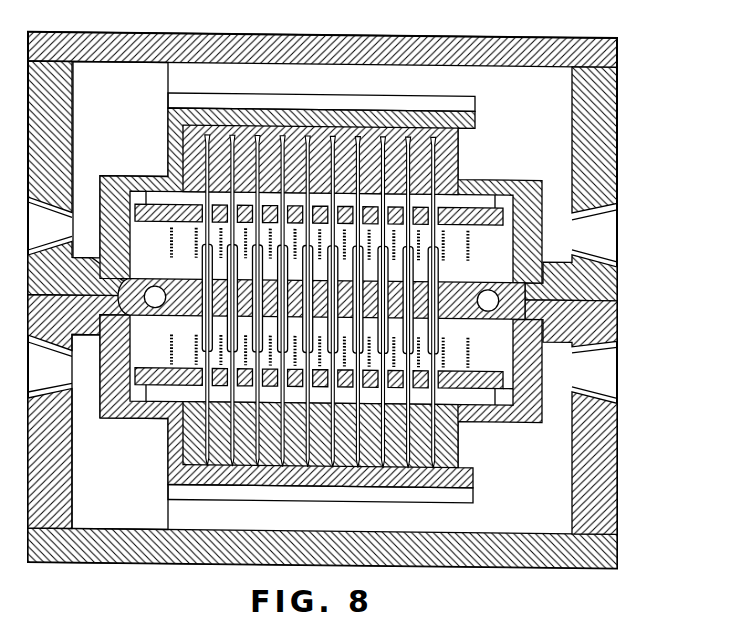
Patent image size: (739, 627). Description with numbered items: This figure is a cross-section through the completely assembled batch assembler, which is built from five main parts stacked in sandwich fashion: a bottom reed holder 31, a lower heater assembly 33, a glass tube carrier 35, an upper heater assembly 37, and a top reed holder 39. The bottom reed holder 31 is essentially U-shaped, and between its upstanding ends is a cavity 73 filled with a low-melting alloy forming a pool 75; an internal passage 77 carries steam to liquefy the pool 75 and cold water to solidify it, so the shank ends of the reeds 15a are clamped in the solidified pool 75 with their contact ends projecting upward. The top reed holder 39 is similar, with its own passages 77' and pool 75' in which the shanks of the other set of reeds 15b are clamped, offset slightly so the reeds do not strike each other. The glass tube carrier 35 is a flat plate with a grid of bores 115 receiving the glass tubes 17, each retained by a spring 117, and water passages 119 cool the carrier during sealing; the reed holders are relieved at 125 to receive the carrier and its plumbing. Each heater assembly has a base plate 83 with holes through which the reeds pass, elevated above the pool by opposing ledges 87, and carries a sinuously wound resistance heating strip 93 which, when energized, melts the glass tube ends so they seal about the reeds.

The set of reeds 15a is at (307, 439).
The set of reeds 15b is at (330, 164).
The glass tube 17 is at (438, 270).
The bottom reed holder 31 is at (622, 452).
The lower heater assembly 33 is at (477, 357).
The glass tube carrier 35 is at (522, 292).
The upper heater assembly 37 is at (480, 227).
The top reed holder 39 is at (627, 138).
The cavity 73 is at (455, 438).
The pool of low-melting alloy 75 is at (321, 402).
The pool of low-melting alloy 75' is at (321, 195).
The internal passage 77 is at (120, 431).
The passages 77' is at (120, 159).
The base plate 83 is at (167, 370).
The ledges 87 is at (503, 397).
The sinuously wound strip 93 is at (172, 338).
The bores 115 is at (443, 315).
The spring 117 is at (203, 288).
The water passages 119 is at (478, 284).
The relief 125 is at (79, 265).